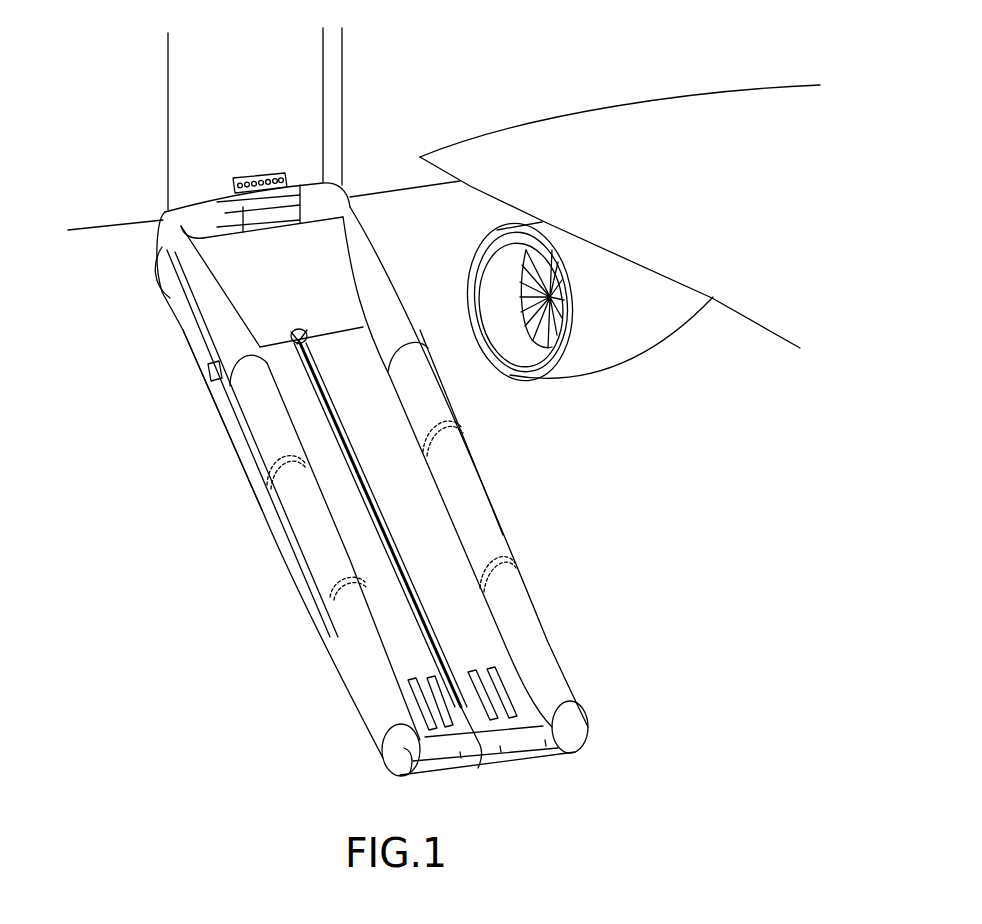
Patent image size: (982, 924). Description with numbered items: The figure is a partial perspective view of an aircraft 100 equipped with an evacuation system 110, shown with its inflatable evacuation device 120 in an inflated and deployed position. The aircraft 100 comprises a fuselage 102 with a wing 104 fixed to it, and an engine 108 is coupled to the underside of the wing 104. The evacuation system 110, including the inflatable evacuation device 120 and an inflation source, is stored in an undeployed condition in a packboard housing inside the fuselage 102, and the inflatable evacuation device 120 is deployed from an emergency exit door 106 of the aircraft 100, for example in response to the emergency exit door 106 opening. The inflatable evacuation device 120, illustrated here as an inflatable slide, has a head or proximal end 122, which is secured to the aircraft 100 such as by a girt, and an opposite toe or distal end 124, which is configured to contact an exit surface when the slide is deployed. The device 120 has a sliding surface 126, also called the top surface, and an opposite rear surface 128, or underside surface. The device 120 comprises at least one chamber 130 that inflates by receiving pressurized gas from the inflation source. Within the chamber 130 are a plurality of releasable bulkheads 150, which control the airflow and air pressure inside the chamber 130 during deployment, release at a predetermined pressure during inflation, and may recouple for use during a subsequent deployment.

The aircraft 100 is at (562, 62).
The fuselage 102 is at (128, 140).
The wing 104 is at (697, 238).
The emergency exit door 106 is at (323, 80).
The engine 108 is at (620, 348).
The evacuation system 110 is at (660, 748).
The inflatable evacuation device 120 is at (95, 215).
The proximal end 122 is at (304, 190).
The toe end 124 is at (547, 752).
The sliding surface 126 is at (421, 490).
The rear surface 128 is at (255, 580).
The chamber 130 is at (228, 318).
The releasable bulkheads 150 is at (280, 455).